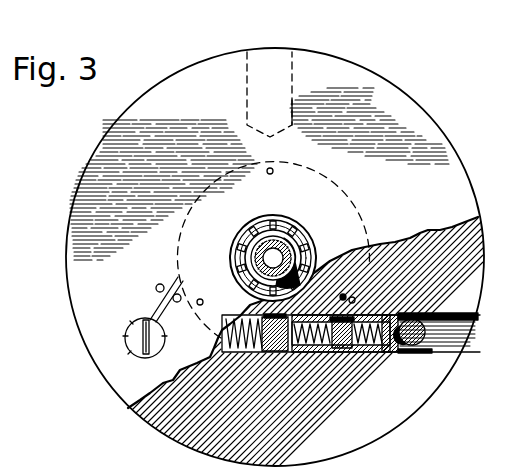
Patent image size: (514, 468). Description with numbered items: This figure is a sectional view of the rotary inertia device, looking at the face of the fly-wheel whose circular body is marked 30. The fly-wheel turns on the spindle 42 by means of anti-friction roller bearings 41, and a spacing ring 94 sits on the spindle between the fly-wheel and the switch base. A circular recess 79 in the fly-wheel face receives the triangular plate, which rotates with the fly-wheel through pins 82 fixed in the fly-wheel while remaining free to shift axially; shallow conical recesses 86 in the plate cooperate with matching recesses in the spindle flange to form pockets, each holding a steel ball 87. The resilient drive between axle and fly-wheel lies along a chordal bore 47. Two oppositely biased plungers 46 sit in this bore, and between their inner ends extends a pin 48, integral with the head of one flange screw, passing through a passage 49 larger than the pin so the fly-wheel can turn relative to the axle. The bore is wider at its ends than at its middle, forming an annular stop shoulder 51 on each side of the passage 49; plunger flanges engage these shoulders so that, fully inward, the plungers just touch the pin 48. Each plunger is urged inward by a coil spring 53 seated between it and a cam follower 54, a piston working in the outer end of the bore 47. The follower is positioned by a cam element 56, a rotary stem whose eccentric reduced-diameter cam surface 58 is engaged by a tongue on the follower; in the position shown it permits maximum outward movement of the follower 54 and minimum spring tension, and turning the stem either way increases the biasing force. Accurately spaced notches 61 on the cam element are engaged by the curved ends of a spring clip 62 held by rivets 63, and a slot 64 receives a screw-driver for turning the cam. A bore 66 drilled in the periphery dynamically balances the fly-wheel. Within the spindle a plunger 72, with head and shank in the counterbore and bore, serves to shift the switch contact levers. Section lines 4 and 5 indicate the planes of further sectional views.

The housing 30 is at (380, 82).
The roller bearings 41 is at (274, 213).
The spindle 42 is at (296, 254).
The plungers 46 is at (338, 350).
The chordal bore 47 is at (460, 346).
The pin 48 is at (272, 352).
The bore or passage 49 is at (304, 350).
The annular stop shoulder 51 is at (343, 295).
The coil spring 53 is at (238, 350).
The cam follower 54 is at (390, 352).
The cam element 56 is at (416, 346).
The cam surface 58 is at (412, 318).
The notches 61 is at (126, 336).
The spring clip 62 is at (170, 300).
The rivets 63 is at (157, 285).
The slot 64 is at (138, 326).
The bore 66 is at (250, 58).
The plunger 72 is at (250, 254).
The circular recess 79 is at (343, 186).
The pins 82 is at (272, 168).
The recesses 86 is at (17, 270).
The steel ball 87 is at (17, 292).
The spacing ring 94 is at (290, 244).
The section line 4- 4 is at (135, 352).
The section line 5- 5 is at (210, 338).